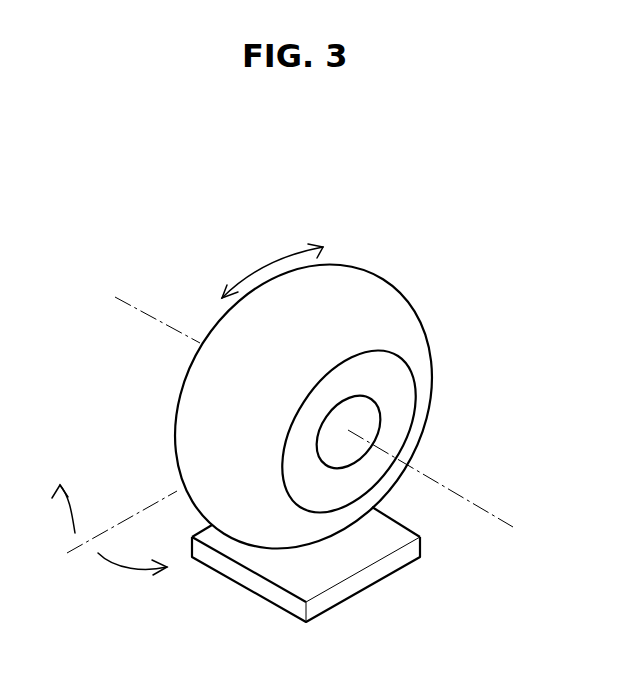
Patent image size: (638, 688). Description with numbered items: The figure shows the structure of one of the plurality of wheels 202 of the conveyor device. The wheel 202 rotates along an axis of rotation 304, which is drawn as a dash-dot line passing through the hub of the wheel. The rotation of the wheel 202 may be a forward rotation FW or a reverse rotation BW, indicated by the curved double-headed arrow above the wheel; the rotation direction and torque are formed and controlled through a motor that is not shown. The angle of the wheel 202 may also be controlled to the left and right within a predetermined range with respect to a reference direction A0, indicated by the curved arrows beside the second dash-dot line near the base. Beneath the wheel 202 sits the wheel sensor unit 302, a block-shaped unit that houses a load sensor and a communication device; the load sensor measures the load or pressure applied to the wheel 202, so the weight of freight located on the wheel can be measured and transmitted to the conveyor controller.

The wheel 202 is at (393, 310).
The wheel sensor unit 302 is at (352, 555).
The axis of rotation 304 is at (473, 502).
The reference direction A0 is at (102, 530).
The forward rotation FW is at (250, 272).
The reverse rotation BW is at (337, 227).